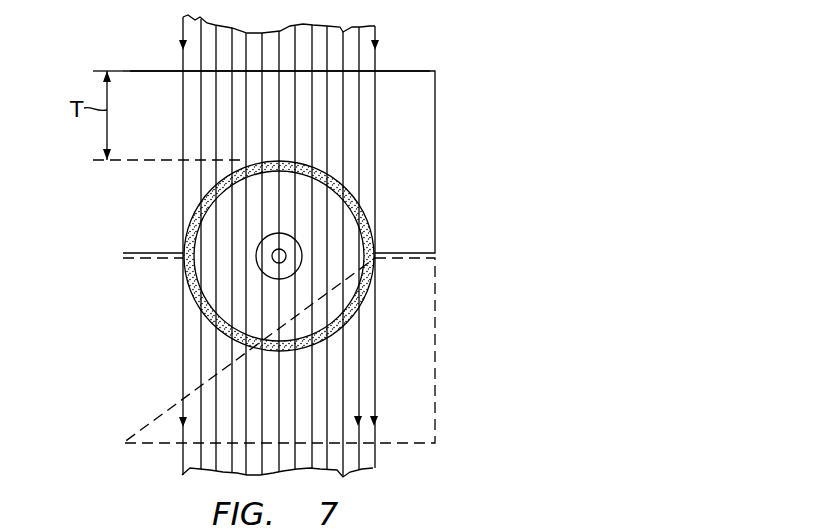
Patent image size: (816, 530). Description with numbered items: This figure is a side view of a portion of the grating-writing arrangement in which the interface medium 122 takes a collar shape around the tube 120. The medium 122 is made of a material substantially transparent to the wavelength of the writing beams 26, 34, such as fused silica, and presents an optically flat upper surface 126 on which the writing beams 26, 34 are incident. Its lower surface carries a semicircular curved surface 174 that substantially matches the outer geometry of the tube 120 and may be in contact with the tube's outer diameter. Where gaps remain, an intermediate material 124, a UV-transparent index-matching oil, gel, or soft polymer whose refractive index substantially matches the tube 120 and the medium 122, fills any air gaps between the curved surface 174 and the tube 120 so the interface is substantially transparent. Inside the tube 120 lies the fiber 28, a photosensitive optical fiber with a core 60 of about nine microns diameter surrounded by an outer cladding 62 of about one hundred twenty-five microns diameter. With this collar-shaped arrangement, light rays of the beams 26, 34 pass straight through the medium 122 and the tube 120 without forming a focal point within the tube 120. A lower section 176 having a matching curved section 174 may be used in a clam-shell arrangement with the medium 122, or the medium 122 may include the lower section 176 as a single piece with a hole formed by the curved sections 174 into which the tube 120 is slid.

The writing beam 26 is at (222, 238).
The writing beam 34 is at (178, 29).
The fiber 28 is at (280, 249).
The core 60 is at (285, 256).
The outer cladding 62 is at (290, 264).
The tube 120 is at (241, 257).
The interface medium 122 is at (440, 118).
The intermediate material 124 is at (345, 184).
The optically flat upper surface 126 is at (422, 71).
The curved surface 174 is at (275, 257).
The lower section 176 is at (424, 355).